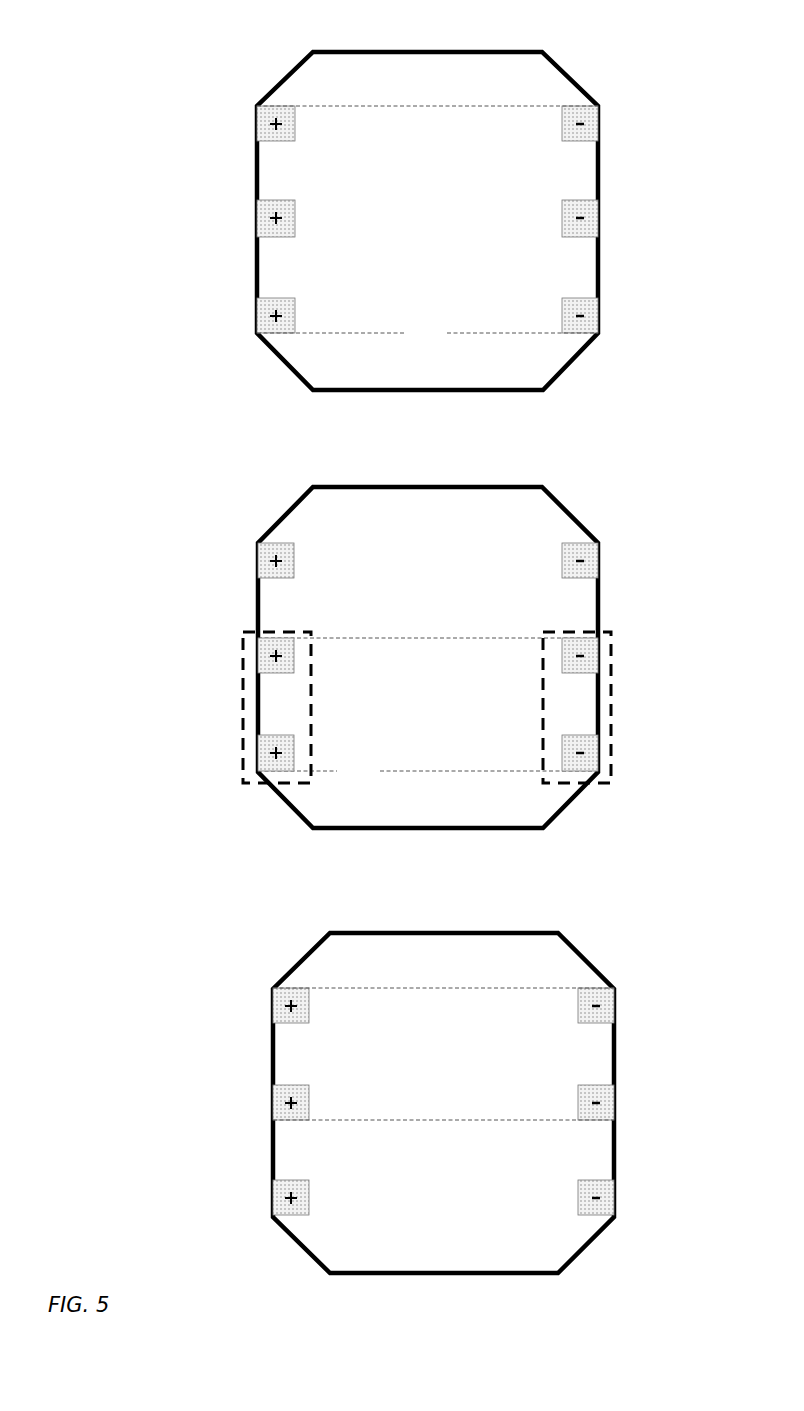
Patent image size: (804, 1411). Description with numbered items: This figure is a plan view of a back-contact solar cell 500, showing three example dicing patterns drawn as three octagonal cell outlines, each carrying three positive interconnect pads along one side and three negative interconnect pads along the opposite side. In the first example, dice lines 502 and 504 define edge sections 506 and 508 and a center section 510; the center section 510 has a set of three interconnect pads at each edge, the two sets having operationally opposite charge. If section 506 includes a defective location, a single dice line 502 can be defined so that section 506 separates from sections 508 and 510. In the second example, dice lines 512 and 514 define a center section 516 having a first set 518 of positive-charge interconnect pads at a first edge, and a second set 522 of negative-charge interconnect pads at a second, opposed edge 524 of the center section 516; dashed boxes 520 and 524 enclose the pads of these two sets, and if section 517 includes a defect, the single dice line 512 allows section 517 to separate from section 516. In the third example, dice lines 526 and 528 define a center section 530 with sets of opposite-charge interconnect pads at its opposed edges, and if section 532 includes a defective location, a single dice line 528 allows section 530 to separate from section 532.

The multi-cell battery stack configuration 500 is at (121, 94).
The dice line 502 is at (517, 107).
The dice line 504 is at (525, 333).
The edge section 506 is at (446, 96).
The edge section 508 is at (446, 368).
The center section 510 is at (446, 241).
The dice line 512 is at (330, 637).
The dice line 514 is at (337, 772).
The center section 516 is at (453, 719).
The section 517 is at (446, 556).
The first set of positive-charge interconnect pads 518 is at (243, 743).
The positive terminal group 520 is at (243, 690).
The second set of negative-charge interconnect pads 522 is at (612, 764).
The second, opposed edge 524 is at (611, 692).
The dice line 526 is at (387, 988).
The dice line 528 is at (513, 1120).
The center section 530 is at (463, 1067).
The section 532 is at (471, 1214).